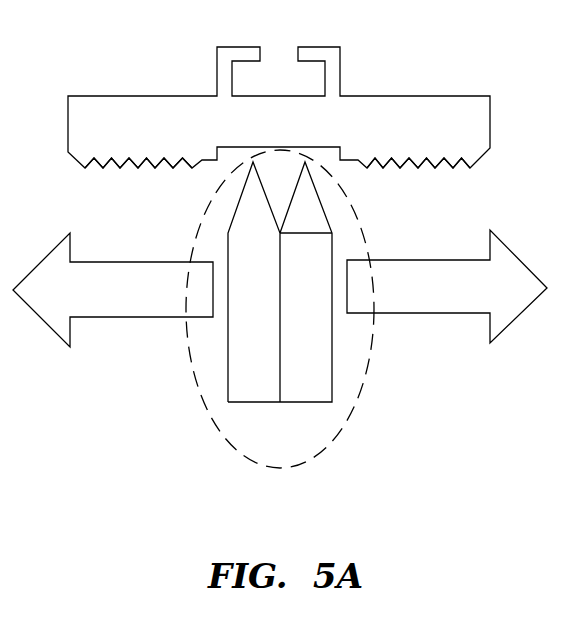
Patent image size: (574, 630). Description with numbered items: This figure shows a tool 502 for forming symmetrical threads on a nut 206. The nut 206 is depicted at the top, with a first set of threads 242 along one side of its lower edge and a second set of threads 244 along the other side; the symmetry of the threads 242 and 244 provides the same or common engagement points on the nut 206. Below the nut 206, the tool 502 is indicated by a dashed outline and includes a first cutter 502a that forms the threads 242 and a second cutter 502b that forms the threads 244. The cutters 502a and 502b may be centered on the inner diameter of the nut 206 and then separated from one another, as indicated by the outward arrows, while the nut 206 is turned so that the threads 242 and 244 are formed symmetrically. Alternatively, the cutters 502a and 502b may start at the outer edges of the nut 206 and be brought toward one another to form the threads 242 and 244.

The nut 206 is at (143, 96).
The threads 242 is at (138, 166).
The threads 244 is at (420, 166).
The tool 502 is at (363, 380).
The first cutter 502a is at (242, 350).
The second cutter 502b is at (317, 385).